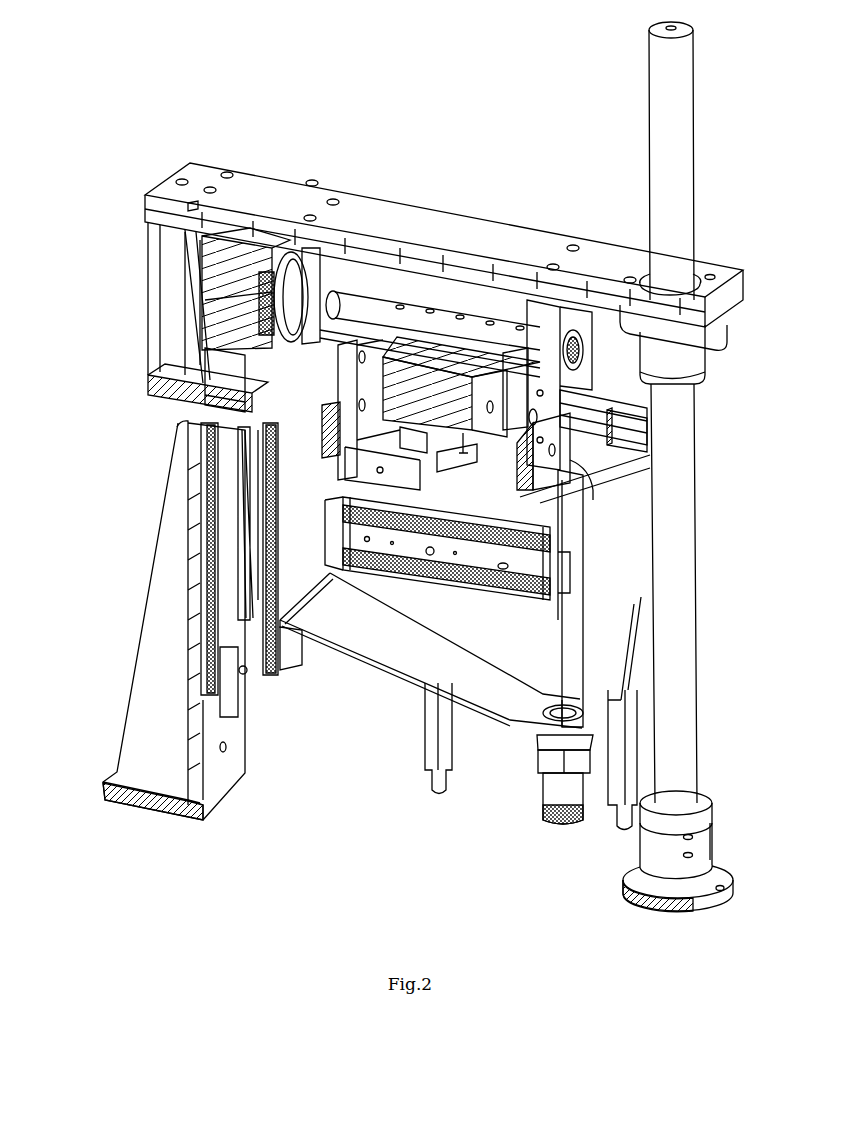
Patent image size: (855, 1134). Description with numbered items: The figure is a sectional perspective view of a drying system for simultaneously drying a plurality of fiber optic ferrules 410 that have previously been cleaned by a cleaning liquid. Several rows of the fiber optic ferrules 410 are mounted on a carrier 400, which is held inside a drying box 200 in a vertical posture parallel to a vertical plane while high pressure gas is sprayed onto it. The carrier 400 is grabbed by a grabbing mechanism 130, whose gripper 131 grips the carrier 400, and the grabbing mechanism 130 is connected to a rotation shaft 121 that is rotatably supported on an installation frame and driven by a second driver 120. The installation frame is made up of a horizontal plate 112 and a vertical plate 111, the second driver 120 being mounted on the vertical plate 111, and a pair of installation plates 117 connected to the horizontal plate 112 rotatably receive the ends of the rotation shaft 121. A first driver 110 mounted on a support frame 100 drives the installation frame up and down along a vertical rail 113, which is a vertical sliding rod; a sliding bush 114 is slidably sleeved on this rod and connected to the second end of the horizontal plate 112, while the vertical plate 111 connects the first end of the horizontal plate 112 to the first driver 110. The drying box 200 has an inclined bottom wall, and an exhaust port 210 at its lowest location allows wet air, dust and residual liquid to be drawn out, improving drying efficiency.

The support frame 100 is at (155, 706).
The first driver 110 is at (565, 503).
The vertical plate 111 is at (190, 332).
The horizontal plate 112 is at (472, 240).
The vertical rail 113 is at (677, 444).
The sliding bush 114 is at (683, 355).
The installation plates 117 is at (313, 270).
The second driver 120 is at (222, 285).
The rotation shaft 121 is at (440, 327).
The grabbing mechanism 130 is at (417, 350).
The gripper 131 is at (570, 567).
The drying box 200 is at (368, 640).
The exhaust port 210 is at (553, 742).
The carrier 400 is at (425, 550).
The fiber optic ferrules 410 is at (300, 487).